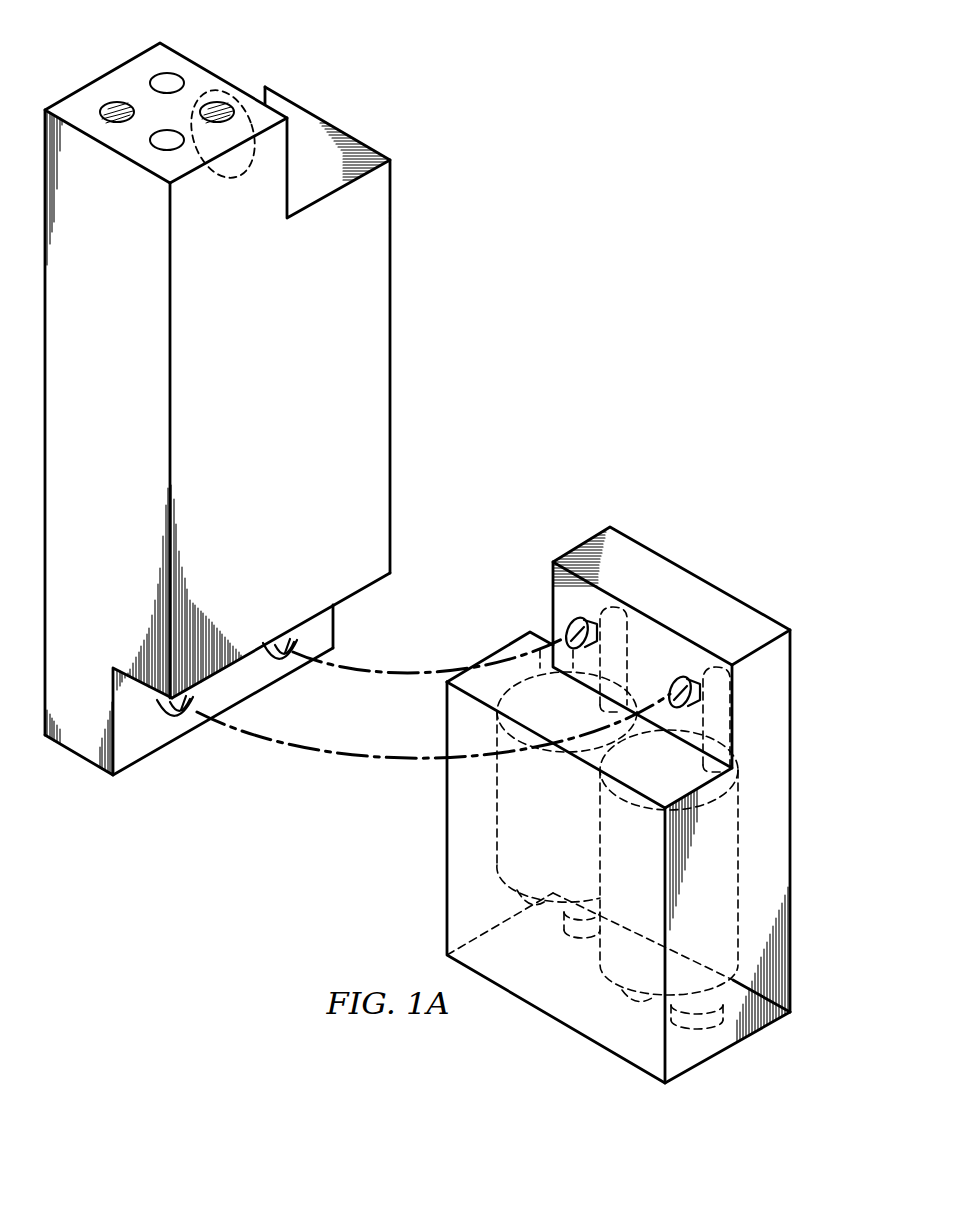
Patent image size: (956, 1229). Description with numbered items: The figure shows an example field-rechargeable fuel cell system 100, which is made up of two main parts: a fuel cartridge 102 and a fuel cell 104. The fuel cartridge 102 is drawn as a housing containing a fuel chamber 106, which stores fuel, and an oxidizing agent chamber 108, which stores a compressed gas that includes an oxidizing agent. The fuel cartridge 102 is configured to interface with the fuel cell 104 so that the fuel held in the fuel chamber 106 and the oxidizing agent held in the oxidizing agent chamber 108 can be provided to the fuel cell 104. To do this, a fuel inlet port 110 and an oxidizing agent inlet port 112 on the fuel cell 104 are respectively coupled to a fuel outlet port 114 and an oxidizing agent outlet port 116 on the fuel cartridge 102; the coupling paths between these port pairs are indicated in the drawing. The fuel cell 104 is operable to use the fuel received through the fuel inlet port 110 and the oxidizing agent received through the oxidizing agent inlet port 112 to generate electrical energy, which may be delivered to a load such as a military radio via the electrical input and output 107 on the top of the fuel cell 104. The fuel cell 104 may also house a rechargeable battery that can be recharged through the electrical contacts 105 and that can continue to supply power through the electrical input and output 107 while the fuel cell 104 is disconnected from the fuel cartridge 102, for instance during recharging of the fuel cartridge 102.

The field-rechargeable fuel cell system 100 is at (541, 136).
The fuel cartridge 102 is at (791, 754).
The fuel cell 104 is at (204, 68).
The electrical contacts 105 is at (160, 72).
The fuel chamber 106 is at (740, 867).
The electrical input and output (I/O) 107 is at (258, 90).
The oxidizing agent chamber 108 is at (497, 822).
The fuel inlet port 110 is at (185, 718).
The oxidizing agent inlet port 112 is at (290, 660).
The fuel outlet port 114 is at (674, 676).
The oxidizing agent outlet port 116 is at (570, 624).